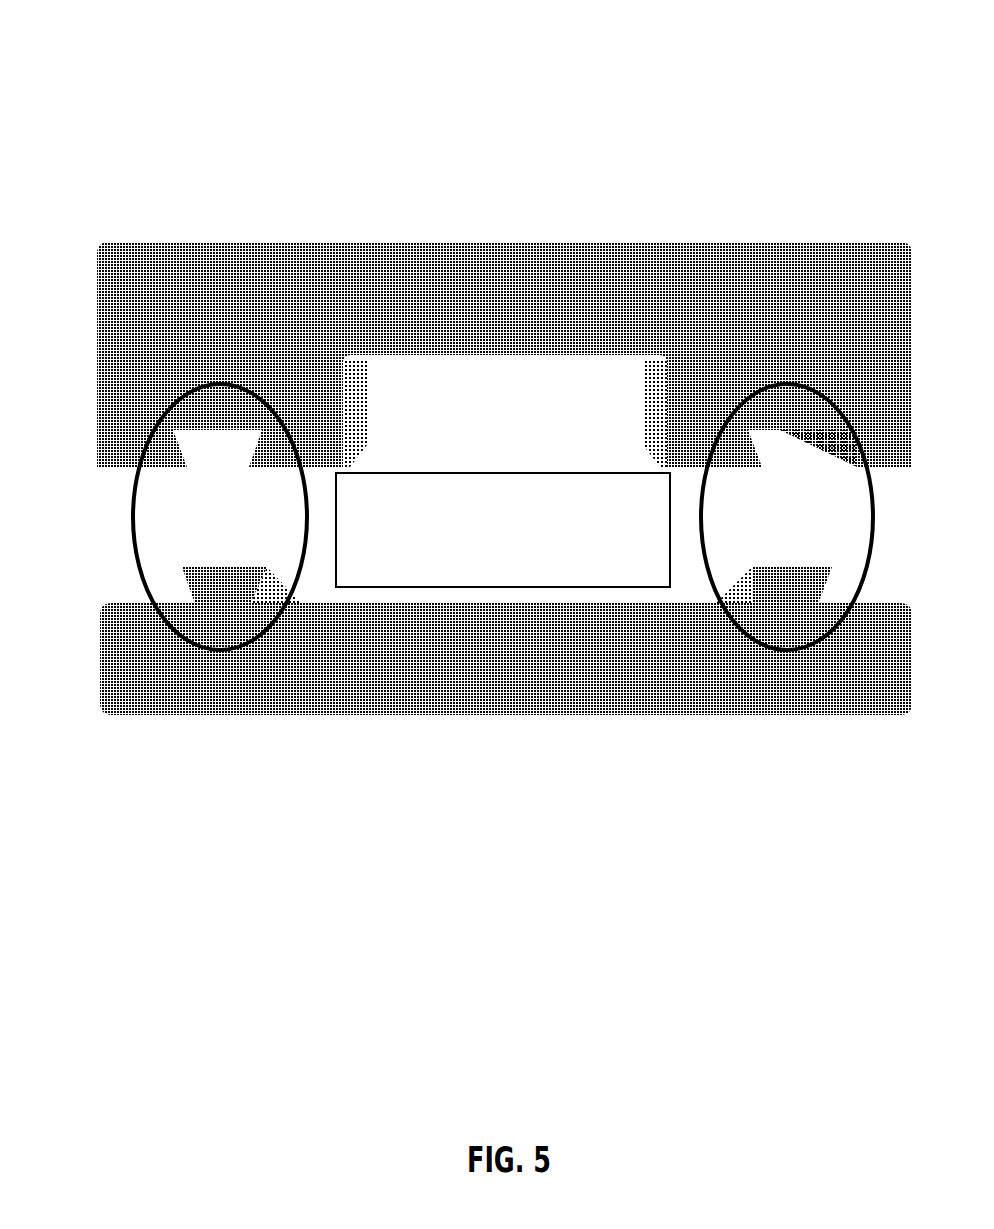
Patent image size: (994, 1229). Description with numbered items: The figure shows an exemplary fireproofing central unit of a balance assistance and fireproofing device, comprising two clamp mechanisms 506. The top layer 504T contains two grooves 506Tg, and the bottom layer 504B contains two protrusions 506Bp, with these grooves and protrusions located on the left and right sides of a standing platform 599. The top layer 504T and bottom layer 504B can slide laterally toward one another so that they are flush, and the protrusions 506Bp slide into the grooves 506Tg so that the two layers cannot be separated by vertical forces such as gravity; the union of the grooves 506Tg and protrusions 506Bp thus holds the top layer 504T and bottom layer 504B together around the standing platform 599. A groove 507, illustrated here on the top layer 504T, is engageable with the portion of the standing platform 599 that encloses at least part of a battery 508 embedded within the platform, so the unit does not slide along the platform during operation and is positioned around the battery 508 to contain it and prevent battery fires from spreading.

The top layer 504T is at (150, 268).
The bottom layer 504B is at (150, 685).
The groove 507 is at (509, 345).
The standing platform 599 is at (454, 457).
The battery 508 is at (565, 515).
The grooves 506Tg is at (697, 49).
The protrusions 506Bp is at (705, 864).
The clamp mechanisms 506 is at (506, 1063).